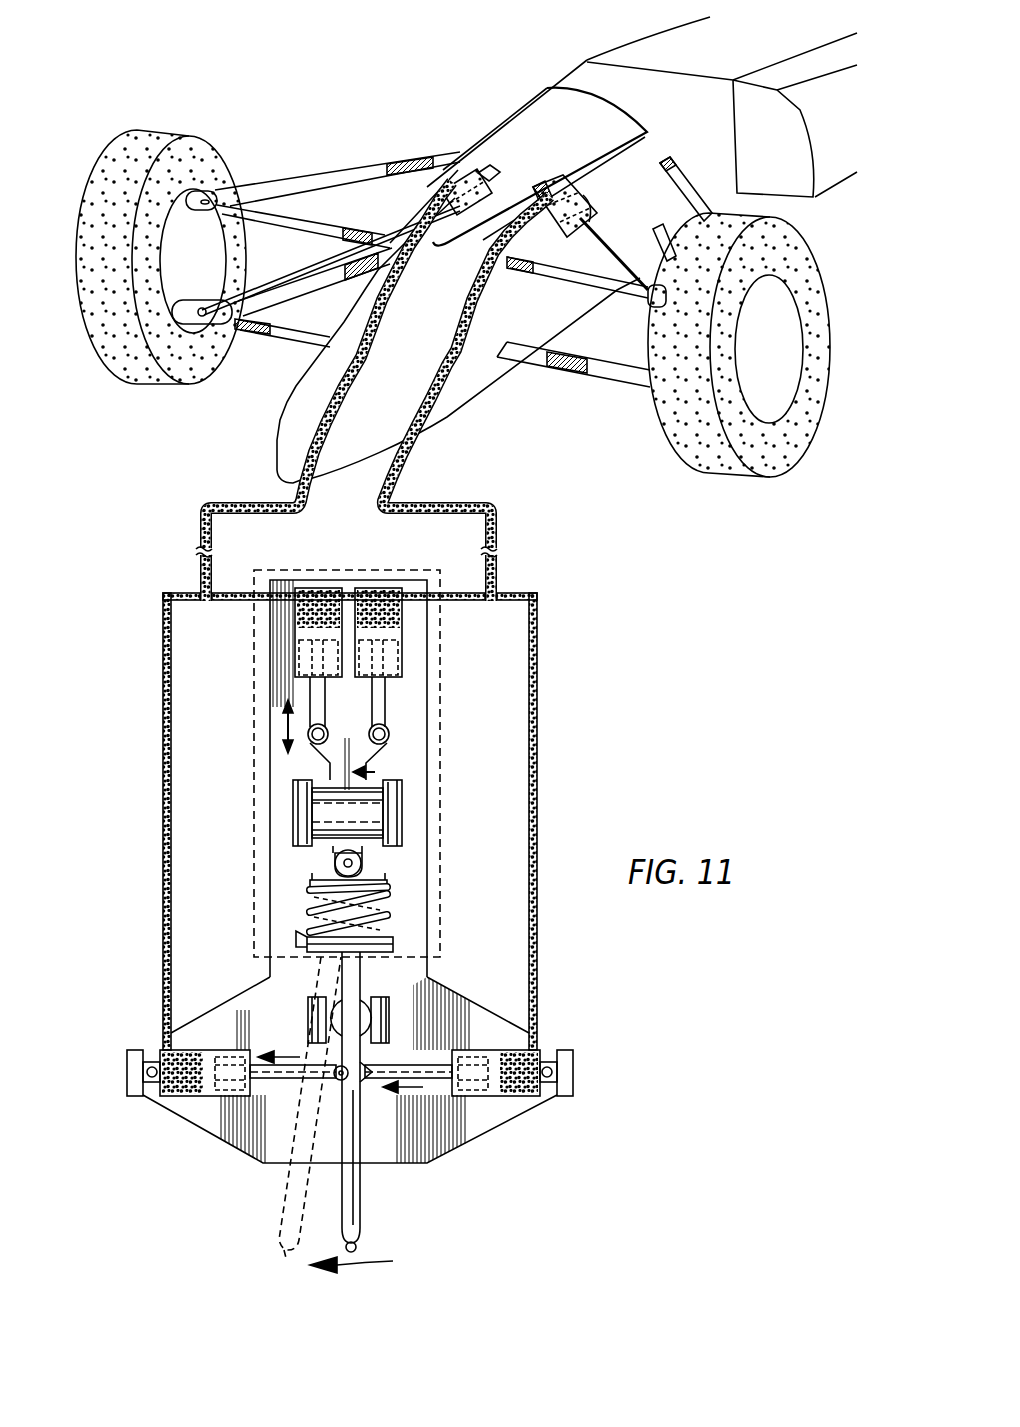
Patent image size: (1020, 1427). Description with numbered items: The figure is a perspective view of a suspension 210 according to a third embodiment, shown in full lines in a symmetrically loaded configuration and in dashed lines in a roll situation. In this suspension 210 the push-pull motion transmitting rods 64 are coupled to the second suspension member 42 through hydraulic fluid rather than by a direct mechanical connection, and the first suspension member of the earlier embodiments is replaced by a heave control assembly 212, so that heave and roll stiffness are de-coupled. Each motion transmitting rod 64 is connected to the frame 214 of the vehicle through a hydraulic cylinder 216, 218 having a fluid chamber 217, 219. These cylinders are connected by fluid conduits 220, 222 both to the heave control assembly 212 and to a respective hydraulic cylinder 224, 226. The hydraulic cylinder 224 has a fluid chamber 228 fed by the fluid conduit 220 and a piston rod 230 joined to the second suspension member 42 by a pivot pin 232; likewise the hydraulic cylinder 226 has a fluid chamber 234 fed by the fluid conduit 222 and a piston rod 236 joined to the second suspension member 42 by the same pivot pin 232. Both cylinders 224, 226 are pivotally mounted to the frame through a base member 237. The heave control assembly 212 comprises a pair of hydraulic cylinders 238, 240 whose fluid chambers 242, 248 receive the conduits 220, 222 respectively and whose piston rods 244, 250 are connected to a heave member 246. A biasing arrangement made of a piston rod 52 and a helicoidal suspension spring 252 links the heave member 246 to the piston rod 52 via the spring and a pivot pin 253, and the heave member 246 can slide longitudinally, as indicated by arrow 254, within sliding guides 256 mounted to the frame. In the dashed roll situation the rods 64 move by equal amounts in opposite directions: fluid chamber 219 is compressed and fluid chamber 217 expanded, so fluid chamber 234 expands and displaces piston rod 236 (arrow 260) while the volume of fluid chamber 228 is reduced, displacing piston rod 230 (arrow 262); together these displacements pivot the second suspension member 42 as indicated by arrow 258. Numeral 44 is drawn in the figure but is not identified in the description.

The second suspension member 42 is at (366, 1140).
The ball joint 44 is at (335, 1025).
The piston rod 52 is at (353, 970).
The motion transmitting rods 64 is at (327, 263).
The suspension 210 is at (166, 507).
The heave control assembly 212 is at (443, 777).
The frame 214 is at (560, 150).
The hydraulic cylinder 216 is at (462, 187).
The fluid chamber 217 is at (484, 173).
The hydraulic cylinder 218 is at (572, 198).
The fluid chamber 219 is at (560, 180).
The fluid conduit 220 is at (238, 505).
The fluid conduit 222 is at (467, 502).
The hydraulic cylinder 224 is at (203, 1050).
The hydraulic cylinder 226 is at (494, 1049).
The fluid chamber 228 is at (186, 1092).
The piston rod 230 is at (283, 1083).
The pivot pin 232 is at (363, 1083).
The fluid chamber 234 is at (513, 1096).
The piston rod 236 is at (410, 1057).
The base member 237 is at (433, 1142).
The hydraulic cylinder 238 is at (295, 657).
The hydraulic cylinder 240 is at (402, 652).
The fluid chamber 242 is at (297, 613).
The piston rod 244 is at (315, 685).
The heave member 246 is at (375, 772).
The fluid chamber 248 is at (402, 617).
The piston rod 250 is at (380, 698).
The helicoidal suspension spring 252 is at (393, 910).
The pivot pin 253 is at (335, 862).
The arrow 254 is at (283, 728).
The sliding guides 256 is at (298, 813).
The arrow 258 is at (367, 1266).
The arrow 260 is at (413, 1087).
The arrow 262 is at (277, 1050).